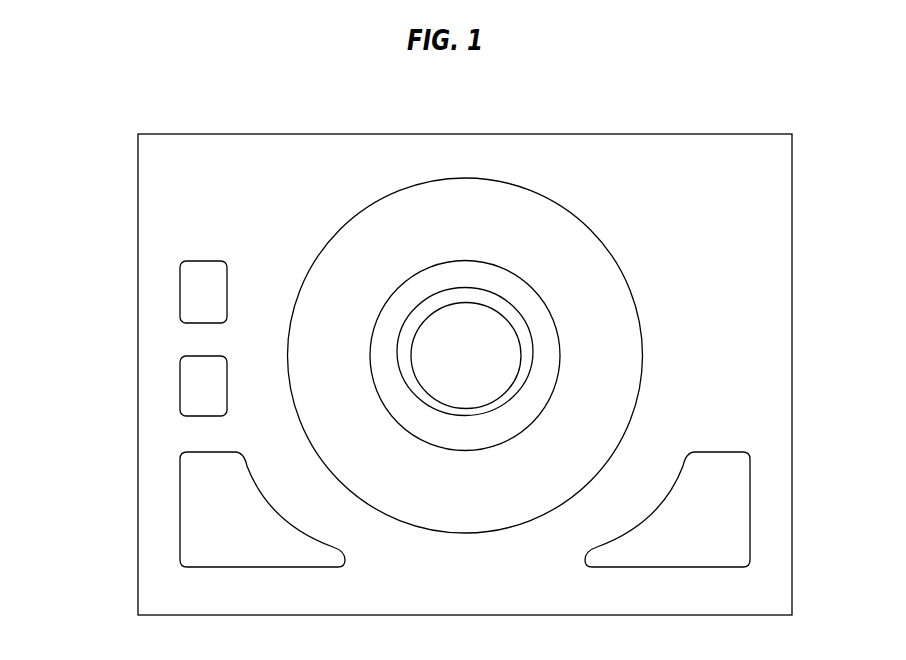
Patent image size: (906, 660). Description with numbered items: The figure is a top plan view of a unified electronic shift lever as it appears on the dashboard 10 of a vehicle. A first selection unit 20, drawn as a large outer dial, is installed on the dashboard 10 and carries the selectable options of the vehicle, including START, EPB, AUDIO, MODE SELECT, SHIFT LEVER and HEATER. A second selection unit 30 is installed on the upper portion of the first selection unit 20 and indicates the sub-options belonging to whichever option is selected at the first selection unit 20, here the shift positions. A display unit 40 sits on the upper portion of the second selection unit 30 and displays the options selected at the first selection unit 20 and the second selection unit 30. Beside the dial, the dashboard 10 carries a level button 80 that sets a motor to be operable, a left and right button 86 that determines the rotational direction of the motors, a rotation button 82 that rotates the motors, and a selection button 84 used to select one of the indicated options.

The dashboard 10 is at (741, 187).
The first selection unit 20 is at (604, 350).
The second selection unit 30 is at (503, 427).
The display unit 40 is at (475, 312).
The level button 80 is at (180, 298).
The rotation button 82 is at (180, 510).
The selection button 84 is at (750, 510).
The left and right button 86 is at (180, 388).